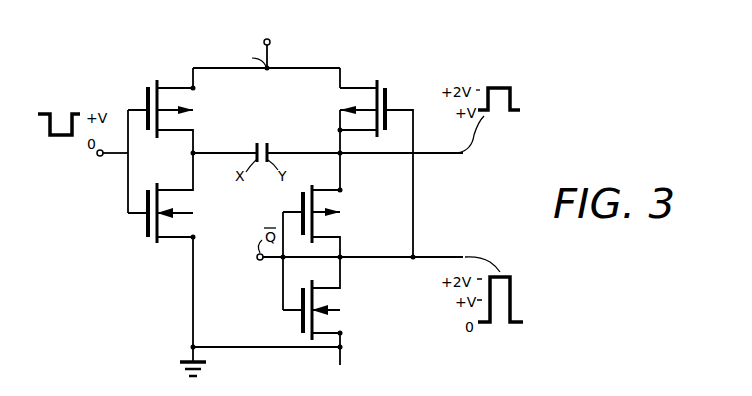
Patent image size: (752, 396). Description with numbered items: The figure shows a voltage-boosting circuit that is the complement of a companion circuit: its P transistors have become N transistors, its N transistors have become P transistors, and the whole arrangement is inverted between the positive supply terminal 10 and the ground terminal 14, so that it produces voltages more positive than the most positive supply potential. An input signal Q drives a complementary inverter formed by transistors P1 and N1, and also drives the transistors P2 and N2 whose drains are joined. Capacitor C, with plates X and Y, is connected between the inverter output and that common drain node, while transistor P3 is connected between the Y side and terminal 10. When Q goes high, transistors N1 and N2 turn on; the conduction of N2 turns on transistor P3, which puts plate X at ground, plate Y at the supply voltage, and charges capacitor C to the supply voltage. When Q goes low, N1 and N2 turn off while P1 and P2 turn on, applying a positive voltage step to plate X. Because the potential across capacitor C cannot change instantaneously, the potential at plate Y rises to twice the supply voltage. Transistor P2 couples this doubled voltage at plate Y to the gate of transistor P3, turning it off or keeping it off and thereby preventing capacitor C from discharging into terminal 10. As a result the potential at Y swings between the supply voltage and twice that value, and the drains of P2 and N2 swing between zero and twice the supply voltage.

The terminal 10 is at (268, 66).
The terminal 14 is at (341, 348).
The transistor P1 is at (220, 118).
The transistor N1 is at (222, 223).
The transistor P3 is at (332, 121).
The transistor P2 is at (370, 223).
The transistor N2 is at (370, 321).
The capacitor C is at (262, 143).
The input signal Q is at (101, 157).